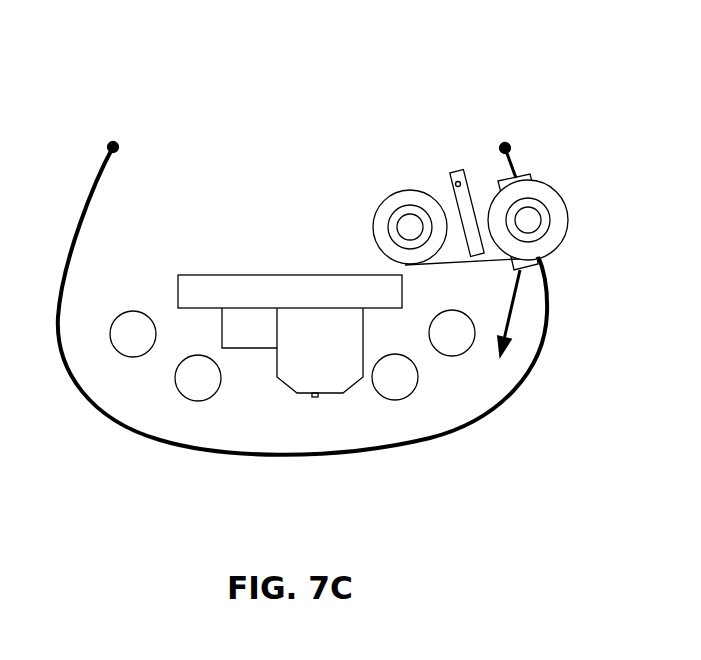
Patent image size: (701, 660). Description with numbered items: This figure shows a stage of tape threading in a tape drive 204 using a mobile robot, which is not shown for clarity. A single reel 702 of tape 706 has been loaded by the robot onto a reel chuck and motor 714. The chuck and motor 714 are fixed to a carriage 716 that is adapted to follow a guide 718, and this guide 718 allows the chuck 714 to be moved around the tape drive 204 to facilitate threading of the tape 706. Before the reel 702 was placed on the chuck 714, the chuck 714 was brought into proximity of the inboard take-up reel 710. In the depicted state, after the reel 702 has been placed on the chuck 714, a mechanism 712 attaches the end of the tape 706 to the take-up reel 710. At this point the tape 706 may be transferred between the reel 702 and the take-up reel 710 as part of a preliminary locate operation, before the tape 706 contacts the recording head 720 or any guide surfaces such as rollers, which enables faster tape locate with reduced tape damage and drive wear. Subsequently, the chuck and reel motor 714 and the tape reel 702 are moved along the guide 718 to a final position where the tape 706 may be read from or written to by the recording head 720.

The tape drive 204 is at (299, 176).
The reel 702 is at (558, 192).
The tape 706 is at (492, 263).
The take-up reel 710 is at (407, 188).
The mechanism 712 is at (453, 168).
The reel chuck and motor 714 is at (523, 172).
The carriage 716 is at (552, 262).
The guide 718 is at (533, 362).
The recording head 720 is at (315, 398).